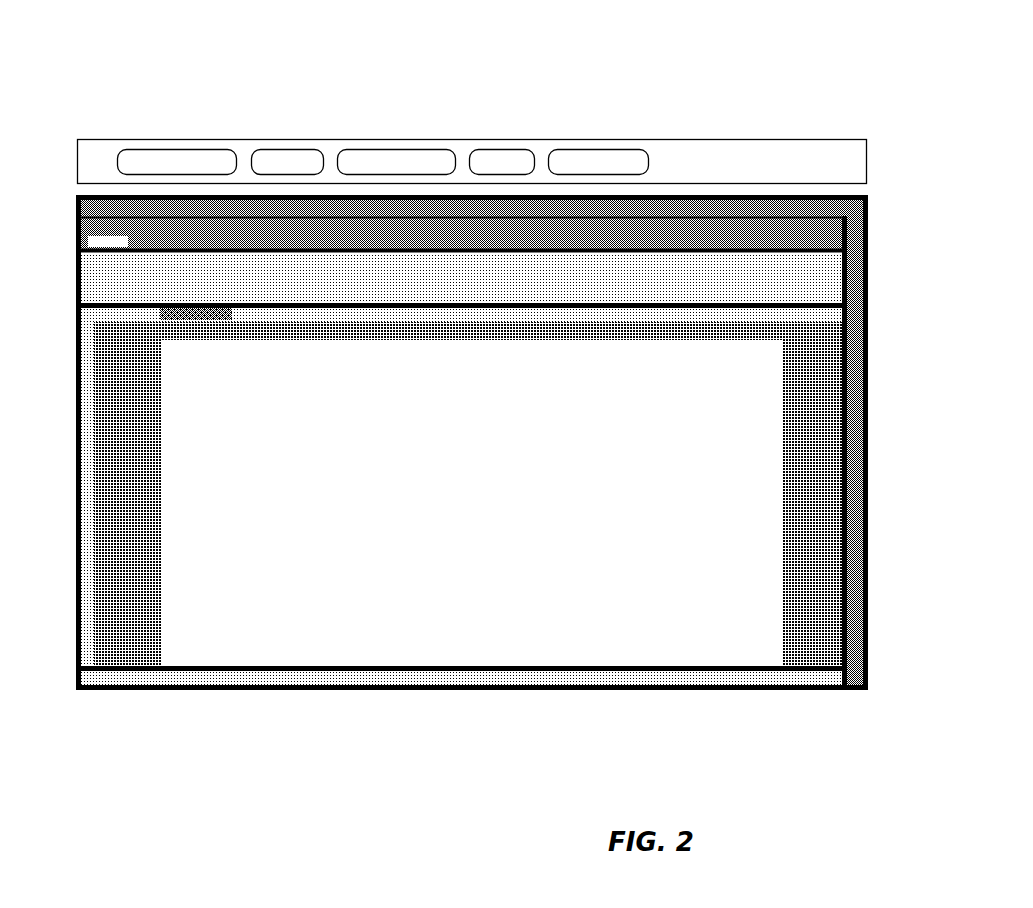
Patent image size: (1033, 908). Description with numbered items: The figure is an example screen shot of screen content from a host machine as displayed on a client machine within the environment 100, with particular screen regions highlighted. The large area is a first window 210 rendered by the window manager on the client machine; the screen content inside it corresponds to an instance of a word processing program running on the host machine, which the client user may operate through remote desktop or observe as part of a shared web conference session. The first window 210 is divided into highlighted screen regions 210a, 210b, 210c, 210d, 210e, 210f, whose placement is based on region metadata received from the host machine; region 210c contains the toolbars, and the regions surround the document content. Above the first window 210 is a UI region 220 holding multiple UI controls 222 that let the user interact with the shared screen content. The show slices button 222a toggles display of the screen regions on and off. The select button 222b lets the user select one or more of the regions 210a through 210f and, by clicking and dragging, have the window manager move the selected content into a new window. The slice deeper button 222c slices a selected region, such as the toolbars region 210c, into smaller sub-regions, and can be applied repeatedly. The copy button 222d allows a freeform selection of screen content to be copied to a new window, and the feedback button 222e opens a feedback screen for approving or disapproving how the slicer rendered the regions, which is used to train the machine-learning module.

The environment 100 is at (706, 60).
The UI region 220 is at (464, 117).
The UI controls 222 is at (138, 78).
The show slices button 222a is at (178, 148).
The select button 222b is at (288, 148).
The slice deeper button 222c is at (398, 148).
The copy button 222d is at (503, 148).
The feedback button 222e is at (601, 148).
The first window 210 is at (265, 734).
The screen region 210a is at (78, 208).
The screen region 210b is at (78, 242).
The screen region 210c is at (88, 290).
The screen region 210d is at (461, 488).
The screen region 210e is at (398, 681).
The screen region 210f is at (847, 690).